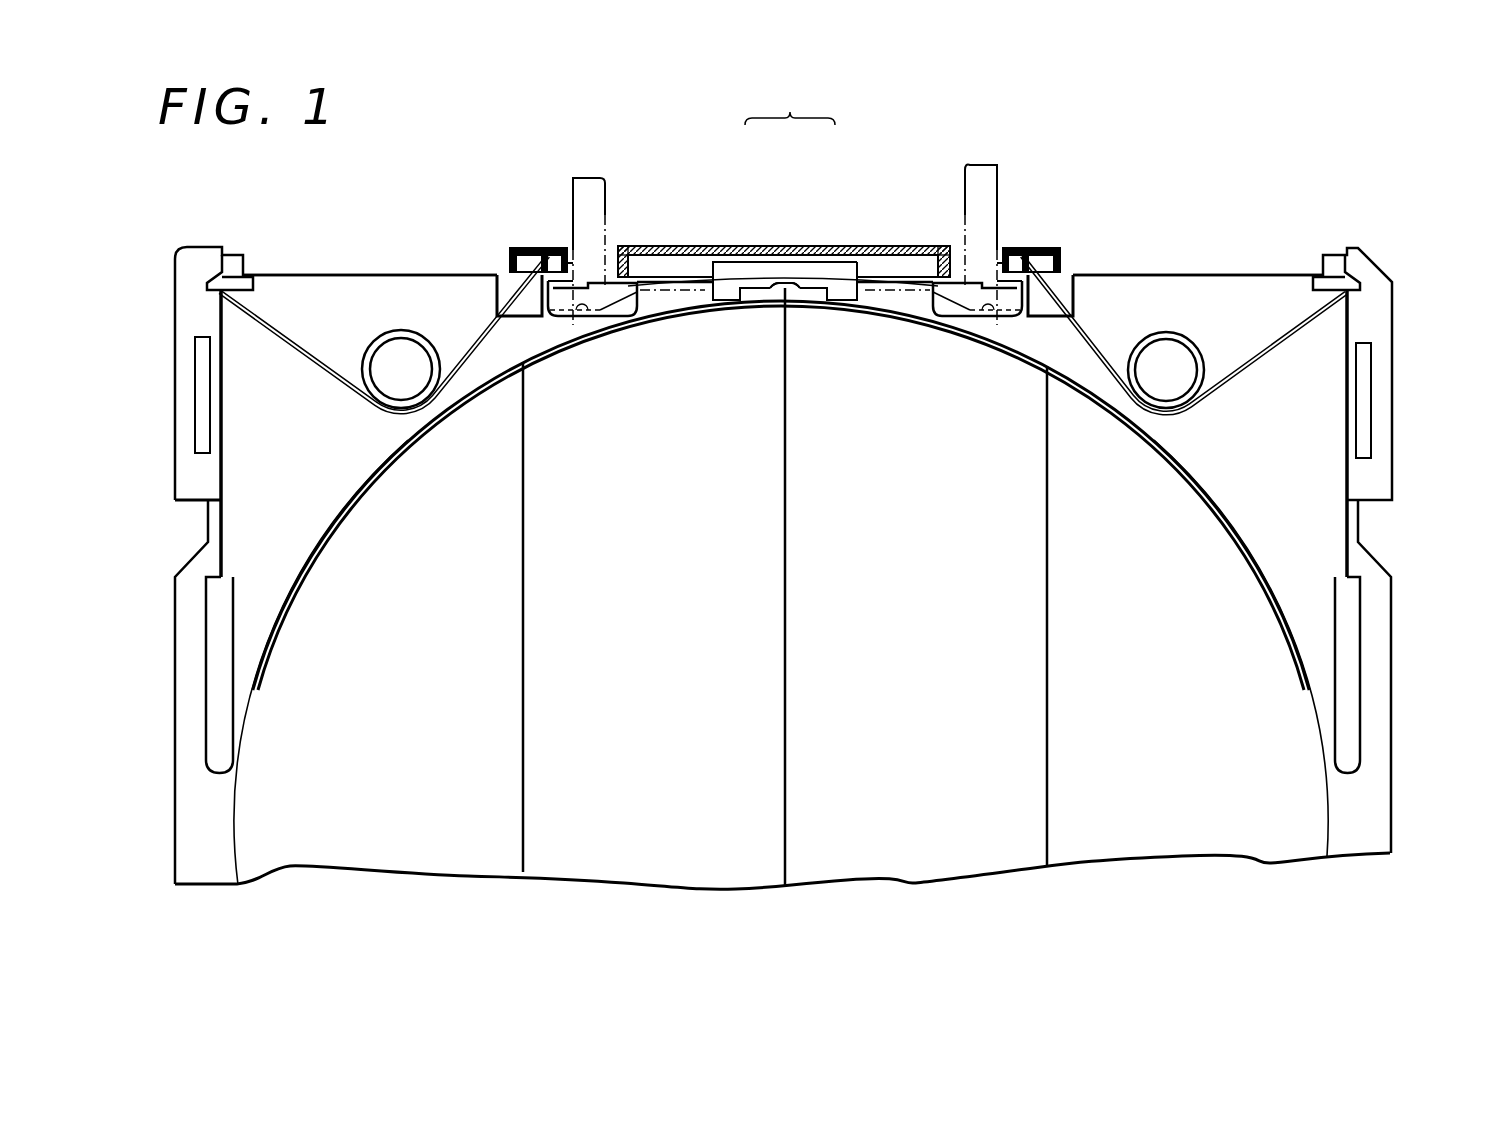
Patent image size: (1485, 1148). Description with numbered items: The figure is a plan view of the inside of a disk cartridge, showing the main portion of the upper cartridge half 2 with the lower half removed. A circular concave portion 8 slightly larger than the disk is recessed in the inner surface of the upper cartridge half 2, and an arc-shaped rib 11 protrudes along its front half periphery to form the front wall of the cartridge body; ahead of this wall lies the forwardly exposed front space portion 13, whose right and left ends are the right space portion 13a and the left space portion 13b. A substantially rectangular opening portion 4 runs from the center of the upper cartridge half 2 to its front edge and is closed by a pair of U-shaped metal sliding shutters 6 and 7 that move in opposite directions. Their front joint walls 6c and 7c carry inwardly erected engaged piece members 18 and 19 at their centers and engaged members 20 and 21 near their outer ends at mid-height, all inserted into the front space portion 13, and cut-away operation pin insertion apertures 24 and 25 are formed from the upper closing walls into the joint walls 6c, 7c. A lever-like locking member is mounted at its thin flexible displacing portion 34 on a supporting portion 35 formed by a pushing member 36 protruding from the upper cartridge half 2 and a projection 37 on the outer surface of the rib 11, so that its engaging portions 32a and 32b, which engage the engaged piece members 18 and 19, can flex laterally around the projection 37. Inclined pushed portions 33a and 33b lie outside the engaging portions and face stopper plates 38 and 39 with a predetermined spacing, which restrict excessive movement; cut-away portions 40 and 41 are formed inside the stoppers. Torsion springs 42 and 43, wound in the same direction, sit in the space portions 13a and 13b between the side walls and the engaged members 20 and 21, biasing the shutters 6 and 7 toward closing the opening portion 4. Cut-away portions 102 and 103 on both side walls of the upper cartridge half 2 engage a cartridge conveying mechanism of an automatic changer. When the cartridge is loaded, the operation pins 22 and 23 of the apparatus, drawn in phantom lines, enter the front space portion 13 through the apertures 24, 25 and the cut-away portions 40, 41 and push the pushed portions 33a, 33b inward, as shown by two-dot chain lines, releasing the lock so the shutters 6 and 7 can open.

The upper cartridge half 2 is at (1207, 275).
The opening portion 4 is at (524, 807).
The sliding shutter 6 is at (923, 842).
The joint wall 6c is at (855, 262).
The sliding shutter 7 is at (728, 838).
The joint wall 7c is at (748, 262).
The circular concave portion 8 is at (242, 812).
The arc-shaped rib 11 is at (262, 643).
The front space portion 13 is at (432, 300).
The right space portion 13a is at (1268, 275).
The left space portion 13b is at (320, 292).
The engaged piece member 18 is at (945, 258).
The engaged piece member 19 is at (620, 246).
The engaged member 20 is at (1068, 262).
The engaged member 21 is at (505, 250).
The operation pin 22 is at (998, 167).
The operation pin 23 is at (585, 176).
The operation pin insertion aperture 24 is at (996, 232).
The operation pin insertion aperture 25 is at (575, 245).
The engaging portion 32a is at (940, 300).
The engaging portion 32b is at (635, 300).
The pushed portion 33a is at (970, 278).
The pushed portion 33b is at (600, 280).
The flexible displacing portion 34 is at (765, 300).
The supporting portion 35 is at (790, 103).
The pushing member 36 is at (771, 286).
The projection 37 is at (797, 286).
The stopper plate 38 is at (1106, 282).
The stopper plate 39 is at (468, 290).
The cut-away portion 40 is at (990, 316).
The cut-away portion 41 is at (588, 316).
The torsion spring 42 is at (1194, 398).
The torsion spring 43 is at (378, 396).
The cut-away portion 102 is at (208, 528).
The cut-away portion 103 is at (1366, 530).